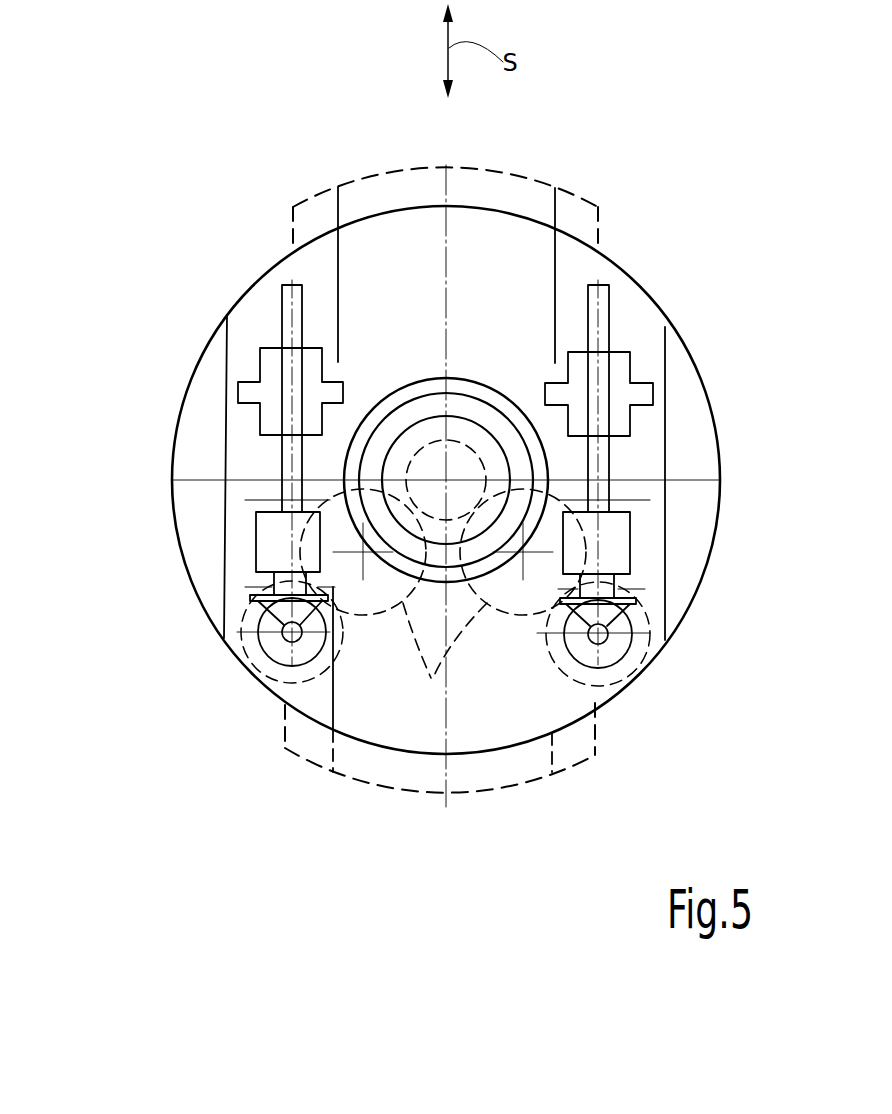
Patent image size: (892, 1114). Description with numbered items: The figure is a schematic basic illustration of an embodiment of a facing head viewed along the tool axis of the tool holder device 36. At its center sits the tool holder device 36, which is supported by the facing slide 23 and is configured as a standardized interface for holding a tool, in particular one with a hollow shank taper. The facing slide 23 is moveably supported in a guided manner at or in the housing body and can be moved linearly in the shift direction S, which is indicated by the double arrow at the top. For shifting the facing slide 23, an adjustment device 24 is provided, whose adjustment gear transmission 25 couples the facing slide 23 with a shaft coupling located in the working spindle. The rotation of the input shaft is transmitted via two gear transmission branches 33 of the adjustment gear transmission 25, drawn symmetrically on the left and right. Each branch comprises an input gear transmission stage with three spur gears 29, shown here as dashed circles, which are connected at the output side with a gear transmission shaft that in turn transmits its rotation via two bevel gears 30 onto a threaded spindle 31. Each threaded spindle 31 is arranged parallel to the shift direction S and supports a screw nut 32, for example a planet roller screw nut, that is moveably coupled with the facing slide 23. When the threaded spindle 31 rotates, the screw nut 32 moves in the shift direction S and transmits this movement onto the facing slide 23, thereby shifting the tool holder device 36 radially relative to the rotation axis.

The facing slide 23 is at (425, 732).
The adjustment device 24 is at (638, 330).
The adjustment gear transmission 25 is at (213, 562).
The spur gears 29 is at (465, 445).
The bevel gears 30 is at (278, 645).
The threaded spindle 31 is at (283, 460).
The screw nut 32 is at (278, 358).
The gear transmission branches 33 is at (275, 242).
The tool holder device 36 is at (435, 373).